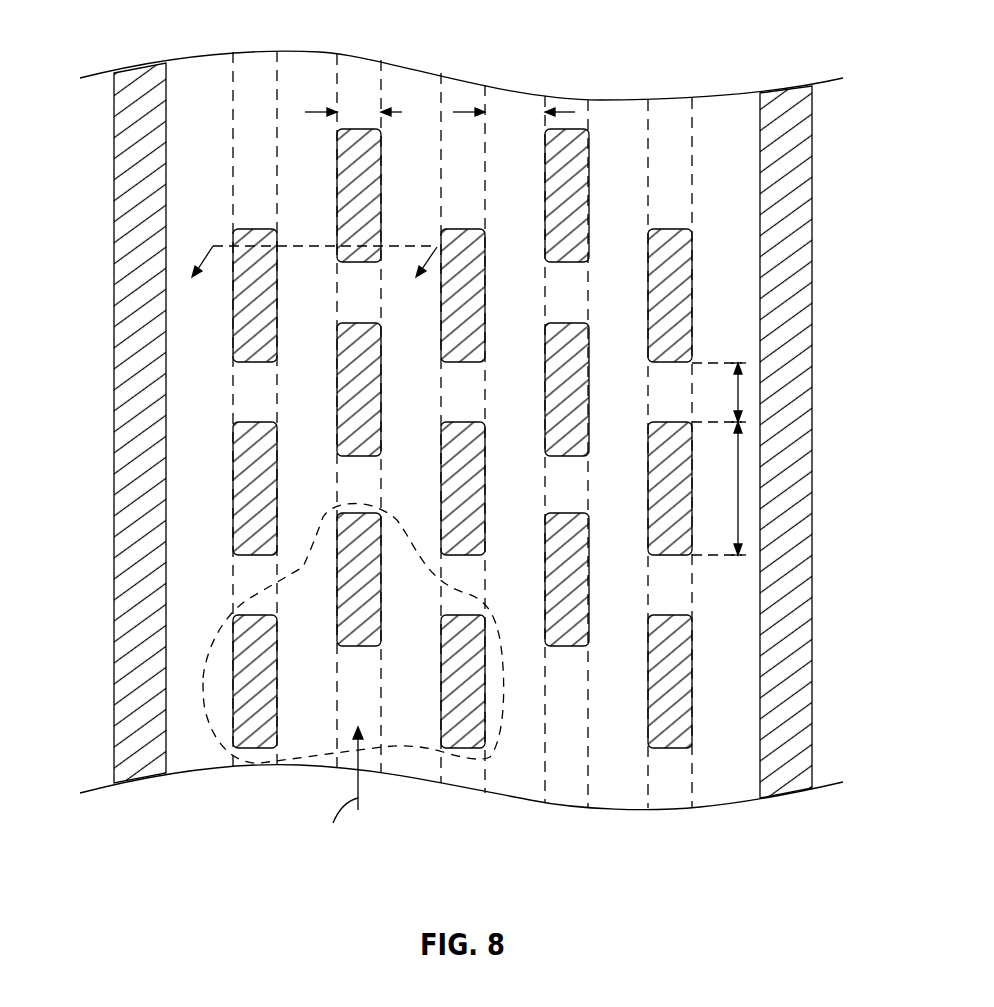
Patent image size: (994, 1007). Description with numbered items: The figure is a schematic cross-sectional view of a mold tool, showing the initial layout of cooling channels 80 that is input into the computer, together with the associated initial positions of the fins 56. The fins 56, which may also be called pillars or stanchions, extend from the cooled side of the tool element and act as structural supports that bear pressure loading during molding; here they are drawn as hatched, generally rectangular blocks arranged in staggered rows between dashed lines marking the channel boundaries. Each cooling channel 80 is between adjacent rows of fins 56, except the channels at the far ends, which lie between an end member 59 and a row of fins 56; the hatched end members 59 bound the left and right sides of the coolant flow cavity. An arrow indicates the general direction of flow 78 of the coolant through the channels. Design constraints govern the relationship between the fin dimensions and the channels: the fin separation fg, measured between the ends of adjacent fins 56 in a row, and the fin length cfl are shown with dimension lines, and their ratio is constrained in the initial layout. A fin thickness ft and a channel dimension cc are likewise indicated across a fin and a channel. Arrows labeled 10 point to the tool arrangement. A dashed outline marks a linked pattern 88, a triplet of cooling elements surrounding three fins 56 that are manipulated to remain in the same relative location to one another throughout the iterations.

The heat exchanger core 10 is at (303, 280).
The fins 56 is at (270, 279).
The end members 59 is at (122, 437).
The general direction of flow 78 is at (342, 791).
The cooling channels 80 is at (198, 745).
The linked pattern 88 is at (203, 678).
The fin thickness ft is at (402, 112).
The channel width cc is at (563, 112).
The fin separation fg is at (738, 383).
The fin length cfl is at (738, 478).